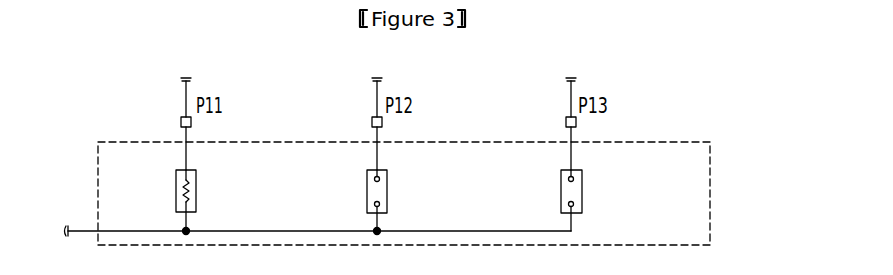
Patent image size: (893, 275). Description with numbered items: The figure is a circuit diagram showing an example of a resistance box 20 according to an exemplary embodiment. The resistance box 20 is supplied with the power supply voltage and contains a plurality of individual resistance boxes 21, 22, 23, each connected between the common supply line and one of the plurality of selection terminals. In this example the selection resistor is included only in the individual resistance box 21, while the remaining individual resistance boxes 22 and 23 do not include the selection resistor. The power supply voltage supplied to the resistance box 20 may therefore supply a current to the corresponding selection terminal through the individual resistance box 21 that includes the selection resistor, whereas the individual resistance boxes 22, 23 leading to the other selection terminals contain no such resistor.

The resistance box 20 is at (710, 150).
The individual resistance box 21 is at (197, 193).
The individual resistance box 22 is at (388, 193).
The individual resistance box 23 is at (583, 193).